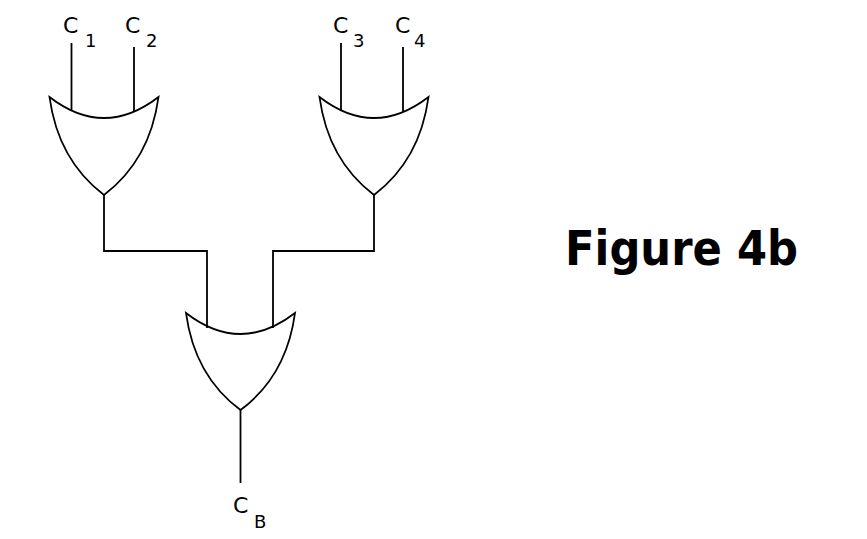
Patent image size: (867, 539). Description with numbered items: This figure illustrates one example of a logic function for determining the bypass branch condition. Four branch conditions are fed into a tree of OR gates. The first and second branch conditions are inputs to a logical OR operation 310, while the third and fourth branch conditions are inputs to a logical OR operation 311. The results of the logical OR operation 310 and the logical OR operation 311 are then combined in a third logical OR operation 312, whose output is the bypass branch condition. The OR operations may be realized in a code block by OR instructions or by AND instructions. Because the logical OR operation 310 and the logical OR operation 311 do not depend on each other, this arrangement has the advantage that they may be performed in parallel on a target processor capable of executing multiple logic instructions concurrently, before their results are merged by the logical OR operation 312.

The logical OR operation 310 is at (151, 139).
The logical OR operation 311 is at (421, 139).
The logical OR operation 312 is at (287, 356).